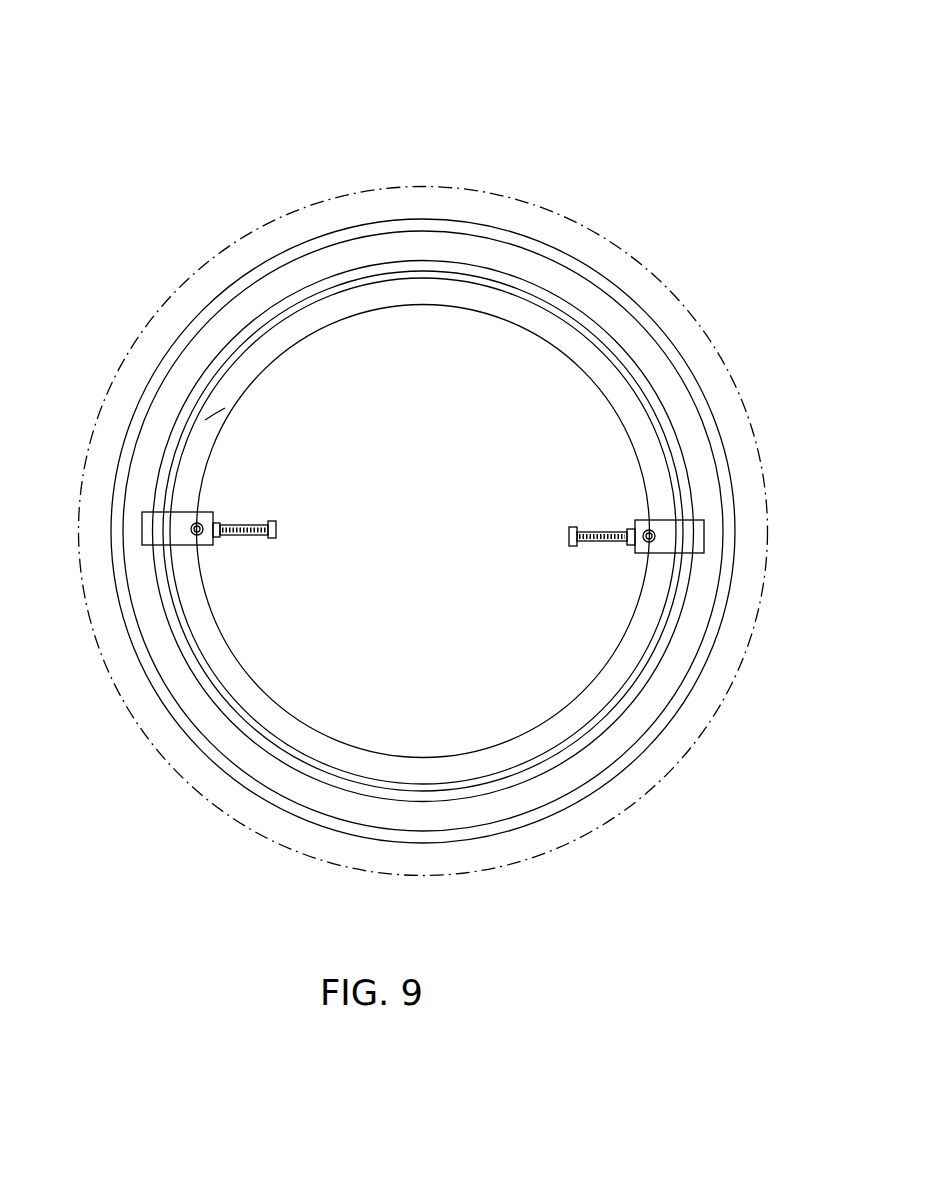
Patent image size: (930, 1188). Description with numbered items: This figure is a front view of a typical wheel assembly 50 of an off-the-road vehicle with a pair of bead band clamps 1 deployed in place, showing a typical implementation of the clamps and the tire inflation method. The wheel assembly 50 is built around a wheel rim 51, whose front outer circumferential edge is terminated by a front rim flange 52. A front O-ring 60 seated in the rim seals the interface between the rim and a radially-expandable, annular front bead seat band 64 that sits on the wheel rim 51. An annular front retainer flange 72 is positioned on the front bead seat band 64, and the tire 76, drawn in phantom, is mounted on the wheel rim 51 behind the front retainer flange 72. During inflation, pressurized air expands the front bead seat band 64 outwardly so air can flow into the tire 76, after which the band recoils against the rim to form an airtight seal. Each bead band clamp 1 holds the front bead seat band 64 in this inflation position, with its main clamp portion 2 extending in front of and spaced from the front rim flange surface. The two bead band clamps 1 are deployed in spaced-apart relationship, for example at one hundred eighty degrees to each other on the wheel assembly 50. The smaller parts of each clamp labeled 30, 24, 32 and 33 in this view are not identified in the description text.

The wheel assembly 50 is at (163, 88).
The tire 76 is at (670, 288).
The front retainer flange 72 is at (257, 270).
The front bead seat band 64 is at (158, 448).
The wheel rim 51 is at (188, 422).
The front rim flange 52 is at (250, 387).
The front O-ring 60 is at (211, 414).
The bead band clamp 1 is at (232, 502).
The main clamp portion 2 is at (137, 527).
The block 30 is at (202, 512).
The screw 24 is at (205, 538).
The bolt head 32 is at (273, 512).
The bolt shank 33 is at (253, 537).